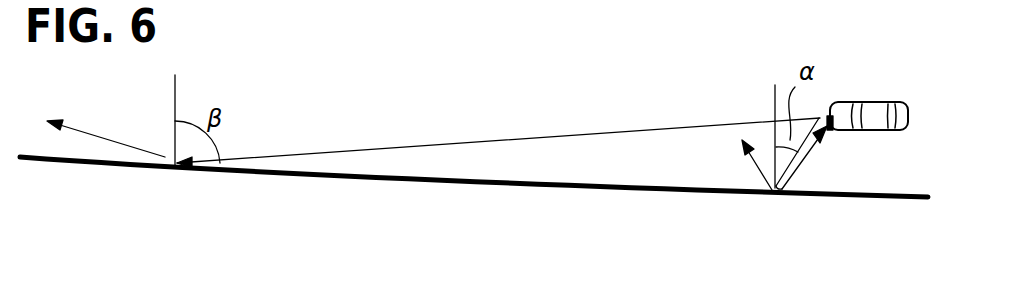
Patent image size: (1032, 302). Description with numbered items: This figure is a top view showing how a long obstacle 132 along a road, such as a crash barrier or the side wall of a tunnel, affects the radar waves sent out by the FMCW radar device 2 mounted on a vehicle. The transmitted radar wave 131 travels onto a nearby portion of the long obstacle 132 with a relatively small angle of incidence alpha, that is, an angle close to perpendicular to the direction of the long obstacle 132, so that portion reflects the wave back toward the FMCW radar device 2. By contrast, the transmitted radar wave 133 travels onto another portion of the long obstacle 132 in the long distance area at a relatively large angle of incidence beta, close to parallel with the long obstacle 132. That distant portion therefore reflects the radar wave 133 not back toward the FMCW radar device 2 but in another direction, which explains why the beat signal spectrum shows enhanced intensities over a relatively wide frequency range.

The FMCW radar device 2 is at (832, 130).
The transmitted radar wave 131 is at (789, 165).
The long obstacle 132 is at (444, 183).
The transmitted radar wave 133 is at (469, 141).